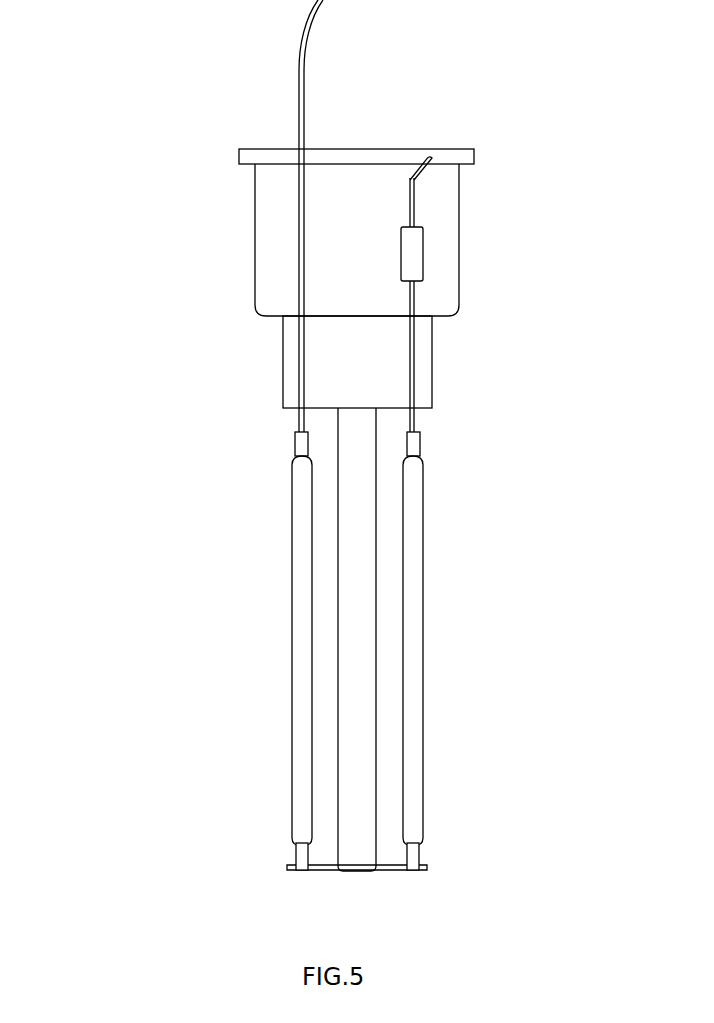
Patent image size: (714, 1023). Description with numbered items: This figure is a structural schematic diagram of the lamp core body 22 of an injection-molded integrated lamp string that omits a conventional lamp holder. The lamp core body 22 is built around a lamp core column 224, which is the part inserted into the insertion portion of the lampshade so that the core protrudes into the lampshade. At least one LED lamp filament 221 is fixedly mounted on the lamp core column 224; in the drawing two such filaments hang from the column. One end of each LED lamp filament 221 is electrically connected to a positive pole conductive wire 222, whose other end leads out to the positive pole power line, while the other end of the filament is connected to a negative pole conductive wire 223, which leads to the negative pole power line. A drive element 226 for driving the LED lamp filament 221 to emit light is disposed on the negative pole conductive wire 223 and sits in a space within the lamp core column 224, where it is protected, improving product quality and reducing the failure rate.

The lamp core body 22 is at (193, 274).
The LED lamp filament 221 is at (303, 607).
The positive pole conductive wire 222 is at (300, 88).
The negative pole conductive wire 223 is at (413, 203).
The lamp core column 224 is at (449, 263).
The drive element 226 is at (412, 250).